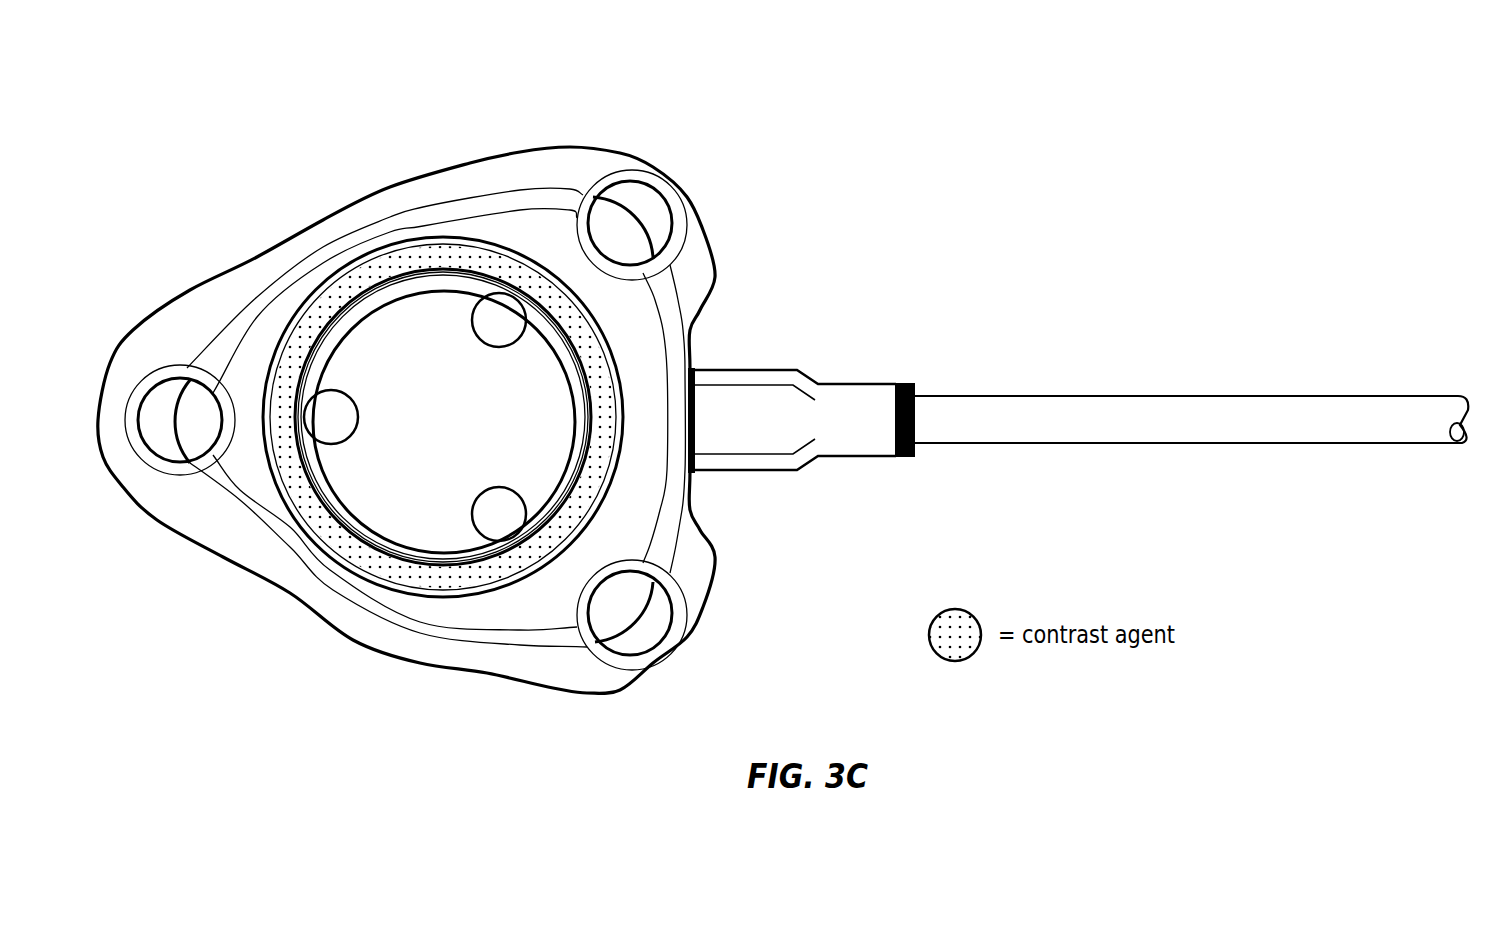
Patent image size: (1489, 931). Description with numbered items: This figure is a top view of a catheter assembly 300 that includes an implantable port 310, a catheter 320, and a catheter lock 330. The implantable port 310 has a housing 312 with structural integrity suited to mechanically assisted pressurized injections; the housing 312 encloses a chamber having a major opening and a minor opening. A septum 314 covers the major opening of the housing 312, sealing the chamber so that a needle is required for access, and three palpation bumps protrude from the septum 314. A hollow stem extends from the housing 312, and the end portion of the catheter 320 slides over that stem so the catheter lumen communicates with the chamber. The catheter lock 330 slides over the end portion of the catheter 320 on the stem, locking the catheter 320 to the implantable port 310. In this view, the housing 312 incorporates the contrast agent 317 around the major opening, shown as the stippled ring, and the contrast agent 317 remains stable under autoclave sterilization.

The catheter assembly 300 is at (783, 413).
The implantable port 310 is at (406, 470).
The housing 312 is at (190, 323).
The septum 314 is at (408, 497).
The contrast agent 317 is at (317, 522).
The catheter 320 is at (1315, 403).
The catheter lock 330 is at (867, 395).